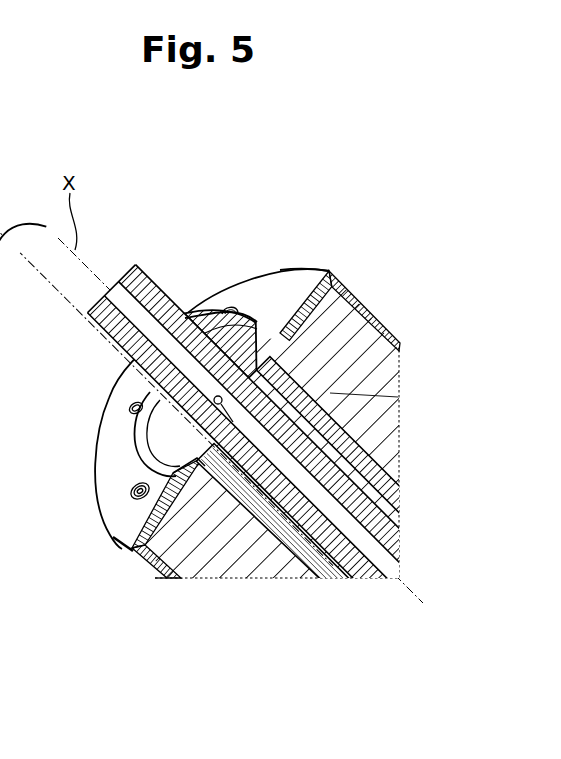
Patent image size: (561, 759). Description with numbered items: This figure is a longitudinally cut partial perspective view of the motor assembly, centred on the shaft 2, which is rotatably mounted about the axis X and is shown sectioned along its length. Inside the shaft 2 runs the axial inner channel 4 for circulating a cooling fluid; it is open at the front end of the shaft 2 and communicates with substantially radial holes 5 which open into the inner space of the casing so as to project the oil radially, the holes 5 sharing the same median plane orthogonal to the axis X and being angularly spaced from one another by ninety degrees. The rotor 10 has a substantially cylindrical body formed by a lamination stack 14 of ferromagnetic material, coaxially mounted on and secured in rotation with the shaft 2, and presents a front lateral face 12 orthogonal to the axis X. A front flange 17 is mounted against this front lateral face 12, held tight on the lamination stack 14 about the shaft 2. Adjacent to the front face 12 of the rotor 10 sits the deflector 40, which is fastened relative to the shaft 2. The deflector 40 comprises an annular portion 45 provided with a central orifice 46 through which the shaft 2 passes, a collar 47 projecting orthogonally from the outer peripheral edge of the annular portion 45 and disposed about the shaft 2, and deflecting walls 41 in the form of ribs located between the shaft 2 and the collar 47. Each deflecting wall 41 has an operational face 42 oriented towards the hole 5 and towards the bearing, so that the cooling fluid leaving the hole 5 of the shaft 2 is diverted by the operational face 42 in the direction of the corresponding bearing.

The shaft 2 is at (190, 322).
The inner channel 4 is at (340, 543).
The hole 5 is at (398, 397).
The rotor 10 is at (128, 575).
The front lateral face 12 is at (126, 520).
The lamination stack 14 is at (388, 323).
The front flange 17 is at (321, 244).
The deflector 40 is at (125, 472).
The deflecting wall 41 is at (243, 333).
The operational face 42 is at (243, 322).
The annular portion 45 is at (180, 440).
The central orifice 46 is at (268, 350).
The collar 47 is at (150, 426).